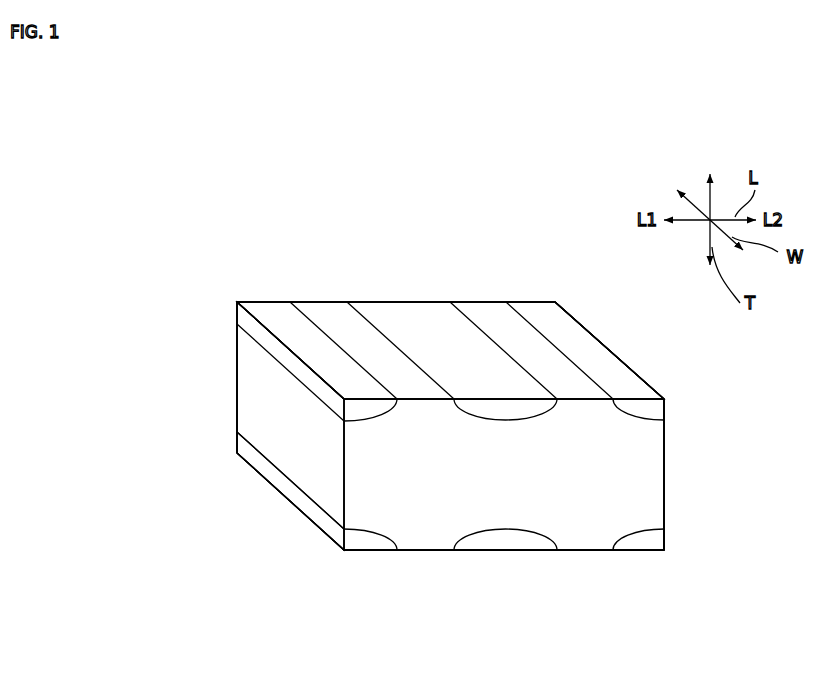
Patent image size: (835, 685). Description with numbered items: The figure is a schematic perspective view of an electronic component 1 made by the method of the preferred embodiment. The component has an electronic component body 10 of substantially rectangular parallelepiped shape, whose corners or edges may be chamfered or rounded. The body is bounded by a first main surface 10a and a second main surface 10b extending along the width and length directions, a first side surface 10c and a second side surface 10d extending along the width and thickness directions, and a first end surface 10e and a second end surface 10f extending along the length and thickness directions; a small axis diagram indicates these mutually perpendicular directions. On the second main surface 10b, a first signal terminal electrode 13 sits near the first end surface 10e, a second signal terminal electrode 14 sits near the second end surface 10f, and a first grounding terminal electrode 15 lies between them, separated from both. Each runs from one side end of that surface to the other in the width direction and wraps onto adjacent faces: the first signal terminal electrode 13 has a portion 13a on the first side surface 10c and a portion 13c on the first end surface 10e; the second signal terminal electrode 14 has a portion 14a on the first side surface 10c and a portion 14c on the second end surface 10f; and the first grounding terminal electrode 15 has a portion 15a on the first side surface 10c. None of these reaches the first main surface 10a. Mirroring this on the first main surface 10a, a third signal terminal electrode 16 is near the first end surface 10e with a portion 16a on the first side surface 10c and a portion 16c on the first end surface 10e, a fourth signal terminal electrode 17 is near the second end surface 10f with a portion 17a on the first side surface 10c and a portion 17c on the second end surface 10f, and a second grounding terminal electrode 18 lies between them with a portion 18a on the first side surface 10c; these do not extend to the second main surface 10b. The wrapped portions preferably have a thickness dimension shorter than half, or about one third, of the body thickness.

The electronic component 1 is at (541, 246).
The electronic component body 10 is at (667, 470).
The first main surface 10a is at (490, 310).
The second main surface 10b is at (582, 553).
The first side surface 10c is at (443, 530).
The second side surface 10d is at (237, 385).
The first end surface 10e is at (250, 414).
The second end surface 10f is at (665, 495).
The first signal terminal electrode 13 is at (352, 554).
The portion of first signal terminal electrode 13a is at (343, 548).
The portion of first signal terminal electrode 13c is at (283, 487).
The second signal terminal electrode 14 is at (649, 554).
The portion of second signal terminal electrode 14a is at (657, 542).
The portion of second signal terminal electrode 14c is at (667, 532).
The first grounding terminal electrode 15 is at (507, 554).
The portion of first grounding terminal electrode 15a is at (483, 542).
The third signal terminal electrode 16 is at (265, 300).
The portion of third signal terminal electrode 16a is at (337, 404).
The portion of third signal terminal electrode 16c is at (250, 323).
The fourth signal terminal electrode 17 is at (556, 300).
The portion of fourth signal terminal electrode 17a is at (648, 408).
The portion of fourth signal terminal electrode 17c is at (668, 399).
The second grounding terminal electrode 18 is at (407, 300).
The portion of second grounding terminal electrode 18a is at (508, 407).